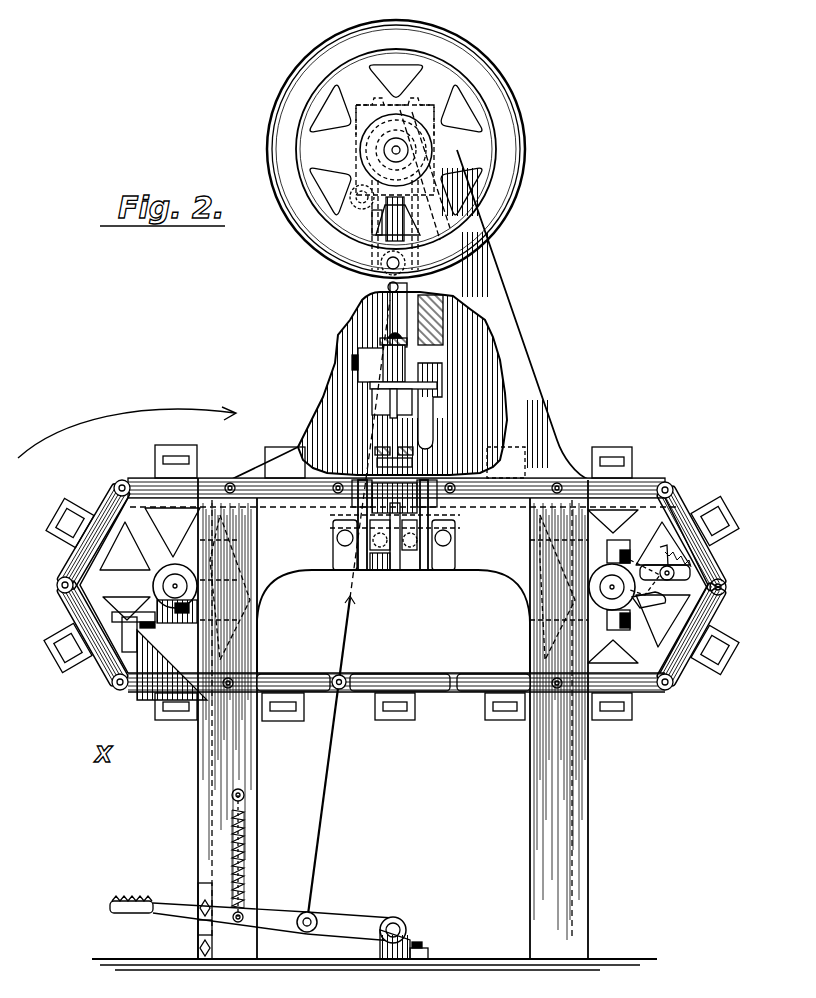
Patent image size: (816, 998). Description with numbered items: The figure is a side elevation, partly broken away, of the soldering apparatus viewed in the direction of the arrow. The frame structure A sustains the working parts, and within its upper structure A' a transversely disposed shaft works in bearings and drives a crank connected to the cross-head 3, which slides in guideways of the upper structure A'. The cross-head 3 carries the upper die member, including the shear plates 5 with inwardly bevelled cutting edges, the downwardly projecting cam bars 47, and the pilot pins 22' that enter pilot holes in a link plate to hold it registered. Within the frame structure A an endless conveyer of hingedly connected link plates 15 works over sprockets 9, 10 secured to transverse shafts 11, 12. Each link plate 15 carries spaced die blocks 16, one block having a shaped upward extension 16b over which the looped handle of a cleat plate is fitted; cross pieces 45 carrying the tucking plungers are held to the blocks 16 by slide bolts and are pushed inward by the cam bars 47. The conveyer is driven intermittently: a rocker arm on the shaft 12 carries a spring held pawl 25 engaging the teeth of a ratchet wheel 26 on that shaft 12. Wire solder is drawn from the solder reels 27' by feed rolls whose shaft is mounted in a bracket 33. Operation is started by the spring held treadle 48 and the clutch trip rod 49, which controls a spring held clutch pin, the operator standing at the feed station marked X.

The frame structure A is at (427, 708).
The upper structure of the frame A' is at (410, 315).
The cross-head 3 is at (370, 340).
The shear plates 5 is at (380, 405).
The sprocket 9 is at (93, 582).
The sprocket 10 is at (670, 640).
The transverse shaft 11 is at (173, 587).
The transverse shaft 12 is at (615, 583).
The link plates 15 is at (72, 617).
The die block 16 is at (72, 538).
The projecting extension of the block 16b is at (743, 447).
The pilot pins 22' is at (503, 399).
The spring held pawl 25 is at (673, 593).
The ratchet wheel 26 is at (640, 602).
The solder reels 27' is at (395, 567).
The bracket 33 is at (440, 572).
The cross pieces 45 is at (165, 461).
The cam bars 47 is at (380, 393).
The spring held treadle 48 is at (110, 907).
The clutch trip rod 49 is at (392, 303).